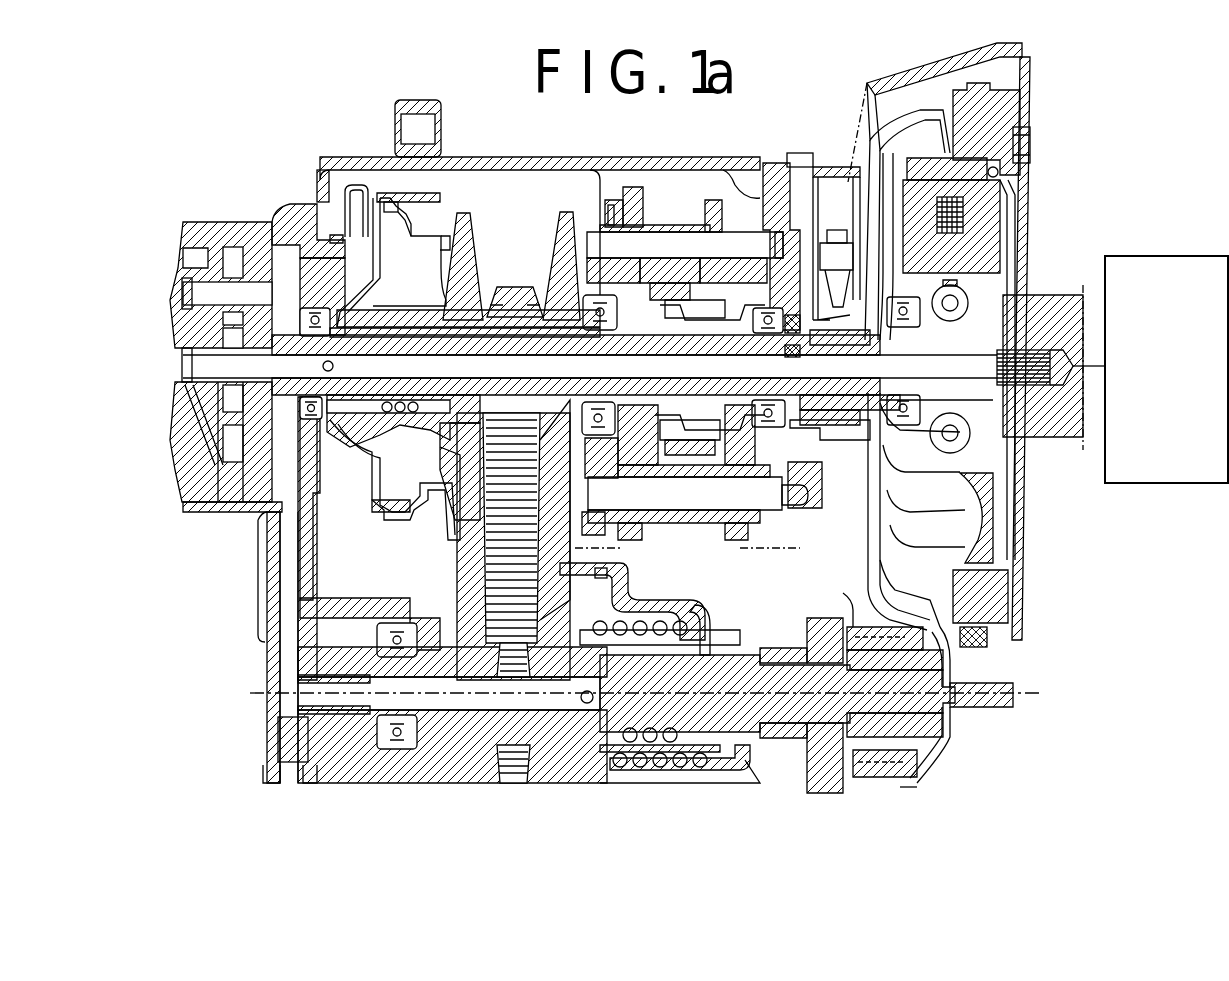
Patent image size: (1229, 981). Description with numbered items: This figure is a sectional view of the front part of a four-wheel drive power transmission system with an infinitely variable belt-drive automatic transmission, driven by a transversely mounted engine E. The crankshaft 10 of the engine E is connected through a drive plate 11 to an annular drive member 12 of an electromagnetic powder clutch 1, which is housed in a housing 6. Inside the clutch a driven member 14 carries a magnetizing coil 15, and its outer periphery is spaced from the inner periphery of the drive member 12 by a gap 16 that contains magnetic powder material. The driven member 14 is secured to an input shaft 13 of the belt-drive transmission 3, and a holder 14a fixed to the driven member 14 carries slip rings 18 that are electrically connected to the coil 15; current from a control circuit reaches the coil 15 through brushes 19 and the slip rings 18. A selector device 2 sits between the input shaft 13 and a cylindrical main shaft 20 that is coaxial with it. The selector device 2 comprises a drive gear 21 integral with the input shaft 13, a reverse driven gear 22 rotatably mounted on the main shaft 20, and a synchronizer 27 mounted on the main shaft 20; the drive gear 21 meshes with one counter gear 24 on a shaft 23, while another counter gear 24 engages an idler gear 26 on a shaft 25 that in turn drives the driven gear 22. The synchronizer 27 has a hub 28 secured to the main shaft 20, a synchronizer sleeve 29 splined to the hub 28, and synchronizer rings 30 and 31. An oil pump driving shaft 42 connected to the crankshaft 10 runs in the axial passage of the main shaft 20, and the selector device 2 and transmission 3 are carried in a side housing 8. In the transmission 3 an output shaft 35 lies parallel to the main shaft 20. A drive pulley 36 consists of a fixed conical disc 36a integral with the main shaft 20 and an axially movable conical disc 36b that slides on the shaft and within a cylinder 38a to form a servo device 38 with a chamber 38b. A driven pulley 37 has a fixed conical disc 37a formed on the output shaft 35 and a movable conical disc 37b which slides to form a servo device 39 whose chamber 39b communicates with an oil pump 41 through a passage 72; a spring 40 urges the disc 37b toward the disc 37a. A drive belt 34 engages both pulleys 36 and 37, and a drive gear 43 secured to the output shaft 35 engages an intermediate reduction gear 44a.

The electromagnetic powder clutch 1 is at (1105, 193).
The selector device 2 is at (700, 195).
The infinitely variable belt-drive transmission 3 is at (525, 178).
The housing 6 is at (952, 745).
The side housing 8 is at (305, 225).
The crankshaft 10 is at (1060, 437).
The drive plate 11 is at (1020, 262).
The annular drive member 12 is at (1022, 105).
The input shaft 13 is at (895, 455).
The driven member 14 is at (990, 203).
The holder 14a is at (820, 400).
The magnetizing coil 15 is at (1010, 220).
The gap 16 is at (1000, 170).
The slip rings 18 is at (850, 405).
The brushes 19 is at (815, 330).
The main shaft 20 is at (612, 350).
The drive gear 21 is at (748, 290).
The reverse driven gear 22 is at (650, 445).
The shaft 23 is at (770, 500).
The counter gear 24 is at (670, 520).
The shaft 25 is at (735, 245).
The idler gear 26 is at (635, 188).
The synchronizer 27 is at (690, 445).
The hub 28 is at (695, 325).
The synchronizer sleeve 29 is at (695, 285).
The synchronizer ring 30 is at (700, 305).
The synchronizer ring 31 is at (628, 275).
The drive belt 34 is at (500, 527).
The output shaft 35 is at (770, 662).
The drive pulley 36 is at (531, 280).
The fixed conical disc 36a is at (555, 235).
The axially movable conical disc 36b is at (467, 232).
The driven pulley 37 is at (452, 578).
The fixed conical disc 37a is at (465, 605).
The movable conical disc 37b is at (550, 775).
The servo device 38 is at (382, 184).
The cylinder 38a is at (430, 198).
The chamber 38b is at (395, 292).
The servo device 39 is at (720, 780).
The chamber 39b is at (562, 618).
The spring 40 is at (692, 625).
The oil pump 41 is at (232, 250).
The oil pump driving shaft 42 is at (198, 378).
The drive gear 43 is at (838, 620).
The intermediate reduction gear 44a is at (810, 768).
The passage 72 is at (290, 655).
The engine E is at (1180, 256).